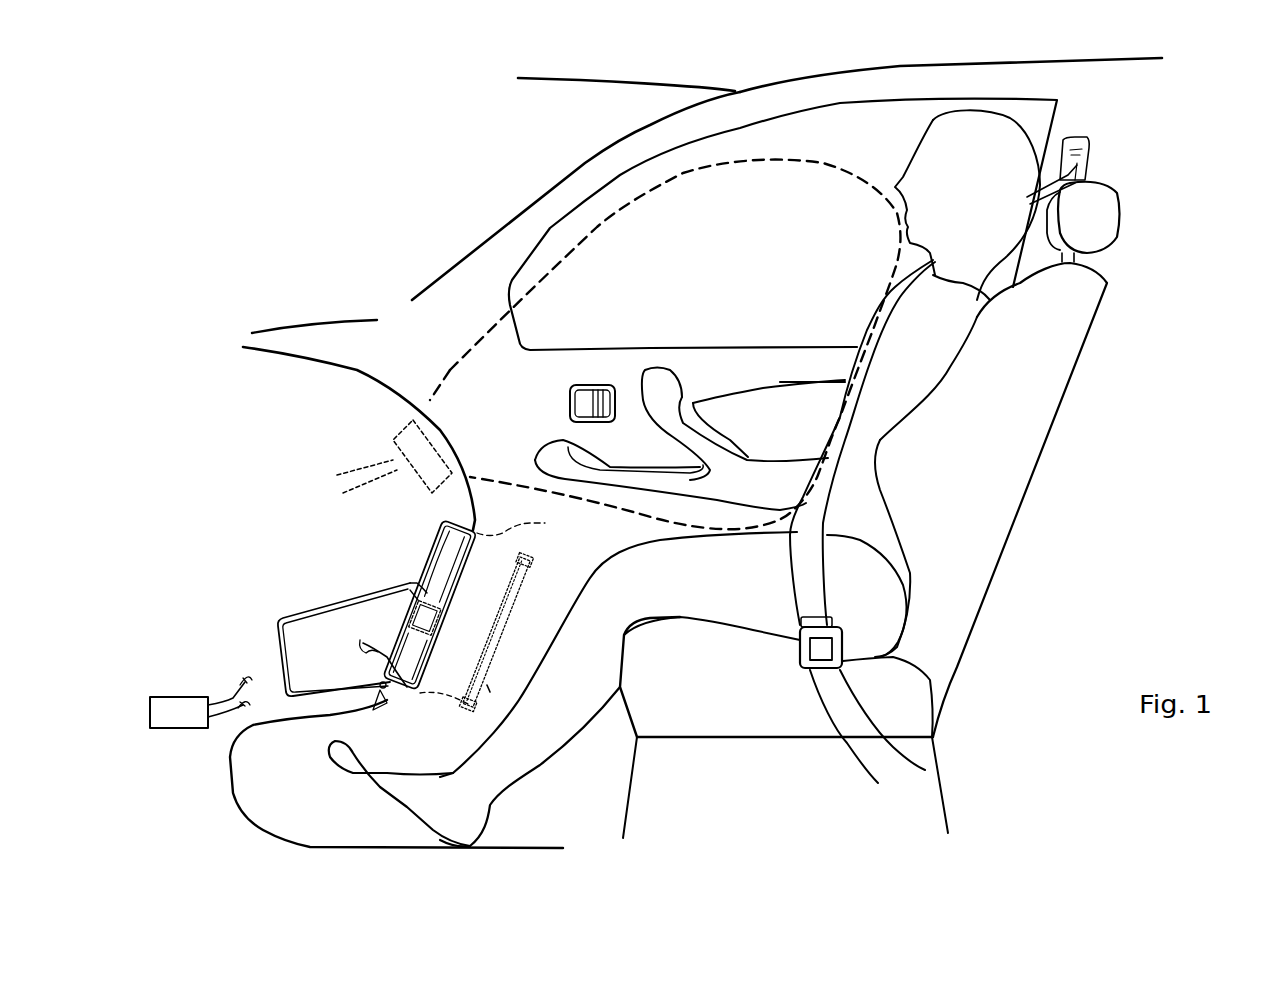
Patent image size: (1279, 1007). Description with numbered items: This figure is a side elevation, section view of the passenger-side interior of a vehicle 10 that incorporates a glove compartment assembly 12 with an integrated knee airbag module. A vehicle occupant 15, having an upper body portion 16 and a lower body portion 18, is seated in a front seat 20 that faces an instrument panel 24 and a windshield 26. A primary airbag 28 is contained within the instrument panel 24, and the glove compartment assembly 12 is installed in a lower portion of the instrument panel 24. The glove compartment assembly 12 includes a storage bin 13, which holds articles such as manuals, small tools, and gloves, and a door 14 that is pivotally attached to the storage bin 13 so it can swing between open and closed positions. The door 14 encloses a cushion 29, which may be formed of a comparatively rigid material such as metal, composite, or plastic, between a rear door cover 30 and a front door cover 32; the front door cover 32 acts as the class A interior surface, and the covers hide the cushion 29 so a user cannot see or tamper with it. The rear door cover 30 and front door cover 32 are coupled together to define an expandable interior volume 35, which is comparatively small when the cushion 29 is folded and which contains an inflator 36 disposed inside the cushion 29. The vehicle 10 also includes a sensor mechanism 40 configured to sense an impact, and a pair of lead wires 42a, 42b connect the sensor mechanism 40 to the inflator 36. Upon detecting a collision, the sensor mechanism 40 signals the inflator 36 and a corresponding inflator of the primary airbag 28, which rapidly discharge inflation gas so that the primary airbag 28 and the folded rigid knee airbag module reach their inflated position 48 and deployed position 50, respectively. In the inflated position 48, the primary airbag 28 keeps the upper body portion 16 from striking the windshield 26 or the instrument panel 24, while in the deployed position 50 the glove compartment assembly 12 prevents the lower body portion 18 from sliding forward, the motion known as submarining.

The vehicle 10 is at (1170, 270).
The glove compartment assembly 12 is at (392, 726).
The storage bin 13 is at (270, 628).
The door 14 is at (483, 705).
The vehicle occupant 15 is at (1003, 163).
The upper body portion 16 is at (883, 298).
The lower body portion 18 is at (560, 753).
The front seat 20 is at (998, 493).
The instrument panel 24 is at (460, 493).
The windshield 26 is at (495, 236).
The primary airbag 28 is at (410, 443).
The cushion 29 is at (440, 577).
The rear door cover 30 is at (433, 548).
The front door cover 32 is at (513, 617).
The expandable interior volume 35 is at (407, 658).
The inflator 36 is at (397, 603).
The sensor mechanism 40 is at (168, 697).
The lead wire 42a is at (232, 693).
The lead wire 42b is at (225, 712).
The inflated position 48 is at (598, 227).
The deployed position 50 is at (540, 523).